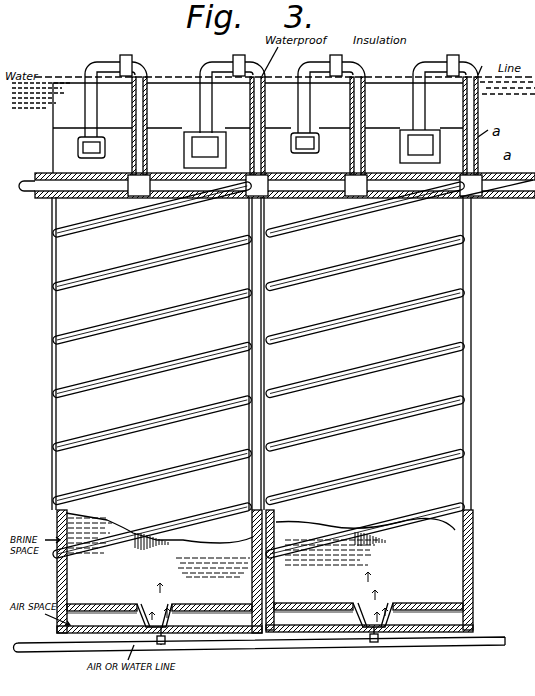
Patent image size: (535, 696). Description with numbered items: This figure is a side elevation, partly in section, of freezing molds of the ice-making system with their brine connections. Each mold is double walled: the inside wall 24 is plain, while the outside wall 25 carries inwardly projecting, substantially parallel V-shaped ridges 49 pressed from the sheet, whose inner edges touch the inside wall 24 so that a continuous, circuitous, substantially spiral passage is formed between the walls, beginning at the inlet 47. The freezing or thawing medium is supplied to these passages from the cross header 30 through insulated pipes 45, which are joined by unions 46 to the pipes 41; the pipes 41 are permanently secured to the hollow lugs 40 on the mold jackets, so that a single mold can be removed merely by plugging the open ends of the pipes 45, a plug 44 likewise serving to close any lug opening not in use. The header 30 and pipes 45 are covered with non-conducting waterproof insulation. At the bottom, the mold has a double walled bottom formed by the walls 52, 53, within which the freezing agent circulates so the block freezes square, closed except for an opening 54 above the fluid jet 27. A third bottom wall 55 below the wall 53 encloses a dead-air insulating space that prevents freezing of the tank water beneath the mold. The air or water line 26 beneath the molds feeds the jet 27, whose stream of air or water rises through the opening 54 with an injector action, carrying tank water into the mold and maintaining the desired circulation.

The inside wall 24 is at (247, 563).
The outside wall 25 is at (293, 415).
The air or water line pipe 26 is at (77, 648).
The fluid jet 27 is at (163, 648).
The cross header 30 is at (518, 180).
The hollow lug 40 is at (298, 132).
The pipe 41 is at (308, 120).
The plug 44 is at (333, 126).
The pipe 45 is at (491, 60).
The union 46 is at (340, 54).
The inlet 47 is at (85, 140).
The ridge 49 is at (368, 366).
The bottom wall 52 is at (227, 595).
The bottom wall 53 is at (257, 614).
The opening 54 is at (173, 627).
The third bottom wall 55 is at (117, 628).